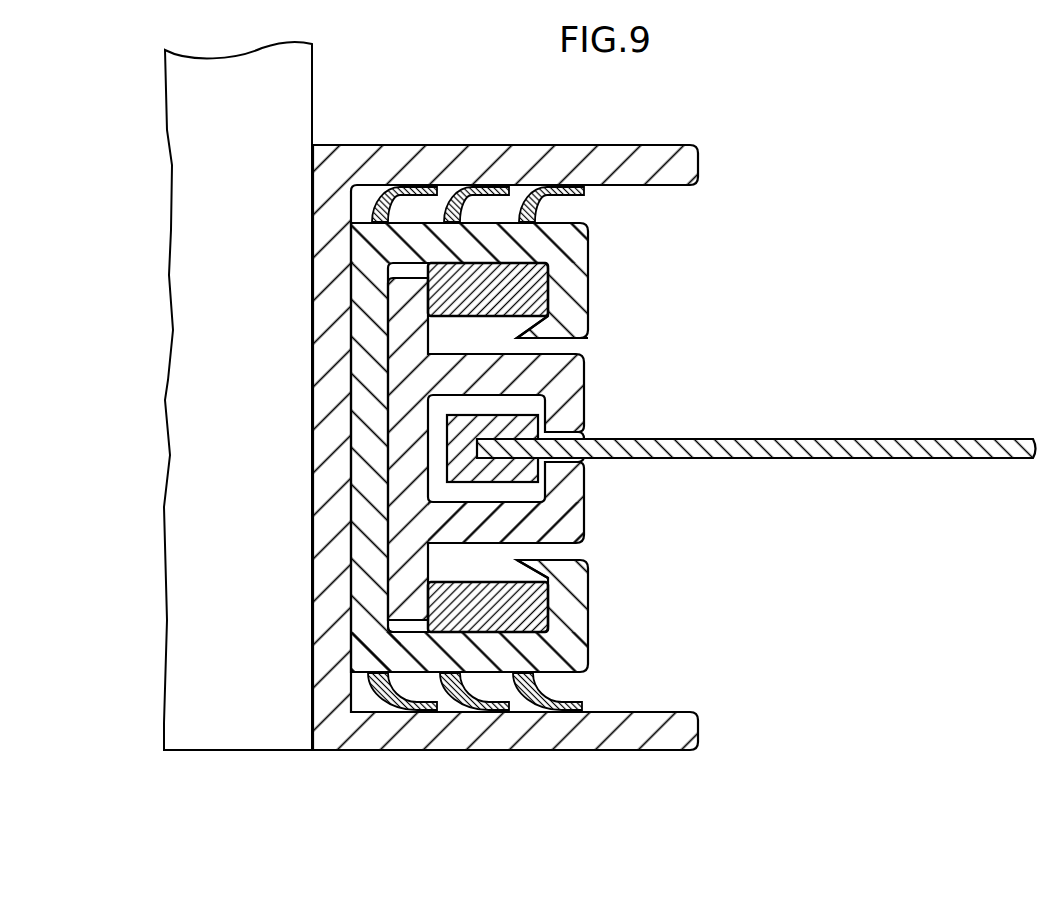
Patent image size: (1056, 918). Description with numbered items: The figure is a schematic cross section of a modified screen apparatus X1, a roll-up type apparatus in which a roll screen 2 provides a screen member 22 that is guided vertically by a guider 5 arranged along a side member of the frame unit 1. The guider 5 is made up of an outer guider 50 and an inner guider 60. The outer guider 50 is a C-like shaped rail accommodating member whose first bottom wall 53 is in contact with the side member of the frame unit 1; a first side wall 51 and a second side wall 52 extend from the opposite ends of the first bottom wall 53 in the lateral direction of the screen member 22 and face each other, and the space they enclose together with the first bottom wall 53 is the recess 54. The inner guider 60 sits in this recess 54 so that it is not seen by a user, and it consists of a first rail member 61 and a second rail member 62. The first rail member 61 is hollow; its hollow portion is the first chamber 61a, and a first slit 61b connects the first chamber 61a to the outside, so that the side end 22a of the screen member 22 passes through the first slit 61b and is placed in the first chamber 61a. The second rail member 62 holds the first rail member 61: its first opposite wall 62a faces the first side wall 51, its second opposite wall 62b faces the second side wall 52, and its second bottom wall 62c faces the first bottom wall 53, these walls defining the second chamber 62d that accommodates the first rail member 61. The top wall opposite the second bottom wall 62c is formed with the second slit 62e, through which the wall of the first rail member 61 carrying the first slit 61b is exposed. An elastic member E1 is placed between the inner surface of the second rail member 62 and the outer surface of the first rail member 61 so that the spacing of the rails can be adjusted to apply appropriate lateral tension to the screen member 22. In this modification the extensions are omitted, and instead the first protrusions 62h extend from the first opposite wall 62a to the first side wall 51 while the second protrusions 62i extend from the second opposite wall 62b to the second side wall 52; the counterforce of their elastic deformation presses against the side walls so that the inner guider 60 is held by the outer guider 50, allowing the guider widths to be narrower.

The frame unit 1 is at (229, 705).
The roll screen 2 is at (930, 290).
The guider 5 is at (790, 100).
The screen member 22 is at (741, 284).
The side end 22a is at (482, 425).
The outer guider 50 is at (533, 466).
The first side wall 51 is at (635, 158).
The second side wall 52 is at (663, 733).
The first bottom wall 53 is at (336, 603).
The recess 54 is at (625, 712).
The inner guider 60 is at (648, 223).
The first rail member 61 is at (550, 449).
The first chamber 61a is at (485, 500).
The first slit 61b is at (576, 441).
The second rail member 62 is at (533, 466).
The first opposite wall 62a is at (484, 242).
The second opposite wall 62b is at (533, 650).
The second bottom wall 62c is at (371, 676).
The second chamber 62d is at (405, 630).
The second slit 62e is at (583, 341).
The first protrusions 62h is at (443, 188).
The second protrusions 62i is at (488, 711).
The elastic member E1 is at (550, 263).
The screen apparatus X1 is at (898, 131).